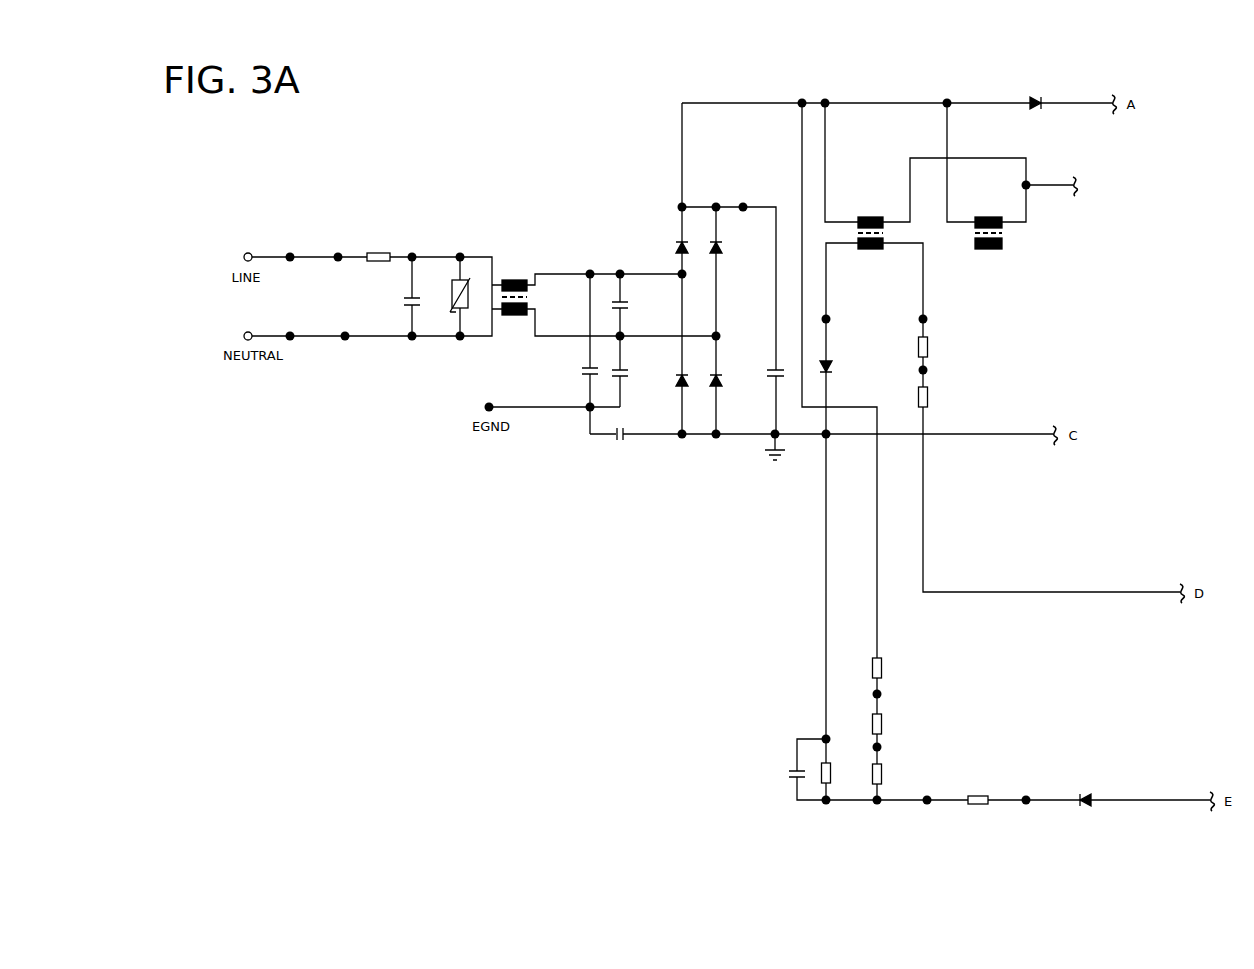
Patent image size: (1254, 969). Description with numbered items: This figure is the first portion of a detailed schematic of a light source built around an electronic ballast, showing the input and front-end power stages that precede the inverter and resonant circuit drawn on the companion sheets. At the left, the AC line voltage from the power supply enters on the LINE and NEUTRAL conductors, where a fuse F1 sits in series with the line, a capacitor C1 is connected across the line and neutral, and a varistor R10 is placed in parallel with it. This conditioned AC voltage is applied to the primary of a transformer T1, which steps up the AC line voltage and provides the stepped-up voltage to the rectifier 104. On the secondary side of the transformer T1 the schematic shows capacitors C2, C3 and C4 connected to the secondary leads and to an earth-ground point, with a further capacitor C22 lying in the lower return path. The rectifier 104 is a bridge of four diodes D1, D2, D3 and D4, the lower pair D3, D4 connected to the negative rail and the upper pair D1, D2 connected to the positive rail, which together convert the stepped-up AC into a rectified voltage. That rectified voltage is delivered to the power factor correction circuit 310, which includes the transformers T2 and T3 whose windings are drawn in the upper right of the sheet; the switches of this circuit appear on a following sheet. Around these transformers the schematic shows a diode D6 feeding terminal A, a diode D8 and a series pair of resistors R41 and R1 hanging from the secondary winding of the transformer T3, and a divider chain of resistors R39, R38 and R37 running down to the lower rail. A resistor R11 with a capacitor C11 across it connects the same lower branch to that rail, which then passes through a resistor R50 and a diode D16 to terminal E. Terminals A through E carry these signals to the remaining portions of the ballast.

The rectifier 104 is at (646, 218).
The power factor correction circuit 310 is at (918, 148).
The fuse F1 is at (378, 247).
The capacitor C1 is at (404, 296).
The varistor R10 is at (448, 296).
The transformer T1 is at (514, 287).
The capacitor C2 is at (580, 354).
The capacitor C3 is at (626, 371).
The capacitor C4 is at (627, 305).
The capacitor C22 is at (624, 446).
The diode D1 is at (671, 248).
The diode D2 is at (723, 248).
The diode D3 is at (671, 381).
The diode D4 is at (723, 381).
The diode D6 is at (1038, 93).
The transformer T3 is at (870, 223).
The transformer T2 is at (988, 223).
The diode D8 is at (834, 369).
The resistor R41 is at (936, 348).
The resistor R1 is at (936, 397).
The resistor R39 is at (887, 668).
The resistor R38 is at (887, 724).
The resistor R37 is at (887, 774).
The resistor R11 is at (835, 774).
The capacitor C11 is at (796, 769).
The resistor R50 is at (978, 812).
The diode D16 is at (1086, 811).